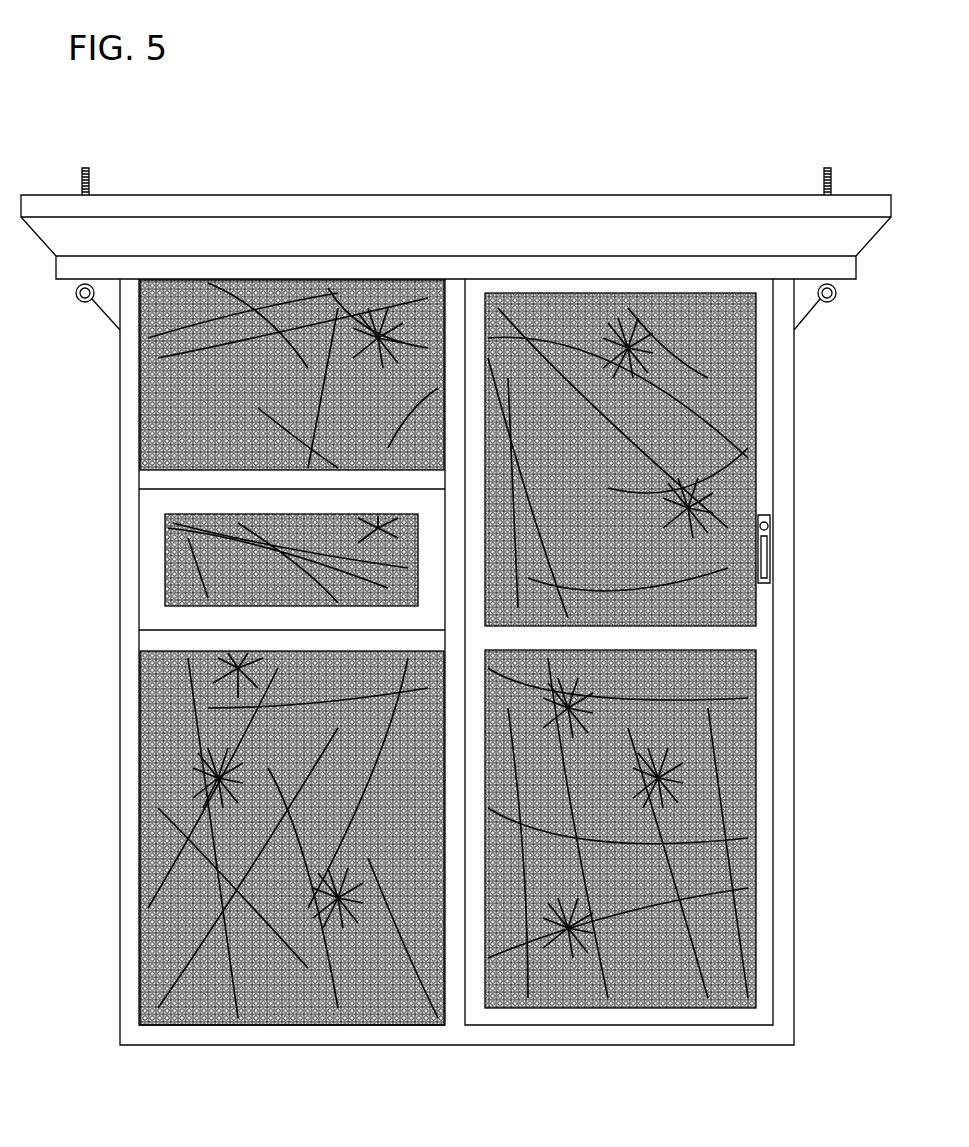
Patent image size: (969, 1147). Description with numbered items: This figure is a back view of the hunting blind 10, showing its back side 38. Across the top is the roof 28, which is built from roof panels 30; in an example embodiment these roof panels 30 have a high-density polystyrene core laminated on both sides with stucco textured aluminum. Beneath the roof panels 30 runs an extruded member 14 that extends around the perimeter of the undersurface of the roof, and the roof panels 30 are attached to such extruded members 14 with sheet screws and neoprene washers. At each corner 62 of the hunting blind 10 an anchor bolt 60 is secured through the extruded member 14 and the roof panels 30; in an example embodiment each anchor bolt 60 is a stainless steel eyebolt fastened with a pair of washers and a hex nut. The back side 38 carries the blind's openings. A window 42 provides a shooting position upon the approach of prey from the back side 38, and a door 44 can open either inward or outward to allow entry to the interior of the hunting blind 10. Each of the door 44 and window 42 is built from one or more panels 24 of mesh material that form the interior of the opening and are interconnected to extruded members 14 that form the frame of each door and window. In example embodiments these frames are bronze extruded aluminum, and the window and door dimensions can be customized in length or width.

The hunting blind 10 is at (736, 68).
The extruded member 14 is at (593, 262).
The panel 24 is at (132, 747).
The roof 28 is at (388, 178).
The roof panel 30 is at (260, 197).
The back side 38 is at (793, 457).
The window 42 is at (160, 560).
The door 44 is at (727, 687).
The anchor bolt 60 is at (72, 296).
The corner 62 is at (25, 187).